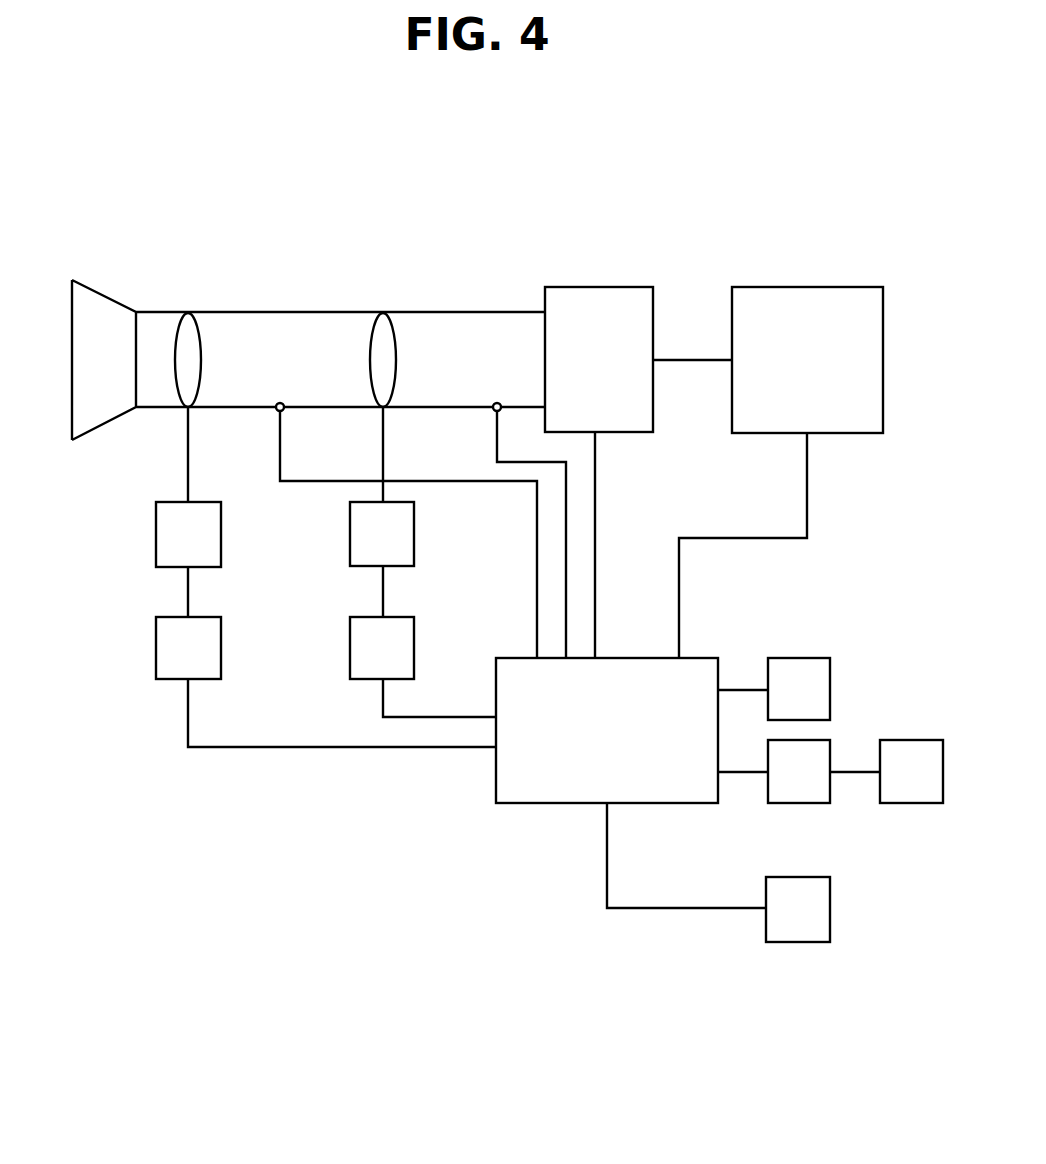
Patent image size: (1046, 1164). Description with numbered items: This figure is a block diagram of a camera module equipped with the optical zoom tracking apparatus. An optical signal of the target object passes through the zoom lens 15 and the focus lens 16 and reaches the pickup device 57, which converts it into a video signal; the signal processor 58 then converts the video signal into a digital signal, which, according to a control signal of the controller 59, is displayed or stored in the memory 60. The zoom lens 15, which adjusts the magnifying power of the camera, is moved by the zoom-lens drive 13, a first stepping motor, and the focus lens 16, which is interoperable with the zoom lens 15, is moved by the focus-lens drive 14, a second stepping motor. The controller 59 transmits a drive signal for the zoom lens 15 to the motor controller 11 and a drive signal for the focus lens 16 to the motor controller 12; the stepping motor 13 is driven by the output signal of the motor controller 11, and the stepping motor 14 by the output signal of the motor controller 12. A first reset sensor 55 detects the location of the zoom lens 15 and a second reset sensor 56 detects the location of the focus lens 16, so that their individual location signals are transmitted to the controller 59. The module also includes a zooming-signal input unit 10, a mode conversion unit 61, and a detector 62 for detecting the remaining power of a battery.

The zooming-signal input unit 10 is at (800, 935).
The motor controller 11 is at (160, 649).
The motor controller 12 is at (355, 649).
The zoom-lens drive 13 is at (160, 537).
The focus-lens drive 14 is at (355, 537).
The zoom lens 15 is at (190, 312).
The focus lens 16 is at (384, 312).
The first reset sensor 55 is at (277, 411).
The second reset sensor 56 is at (494, 411).
The pickup device 57 is at (596, 297).
The signal processor 58 is at (779, 297).
The controller 59 is at (629, 667).
The memory 60 is at (801, 667).
The mode conversion unit 61 is at (800, 795).
The detector 62 is at (912, 795).